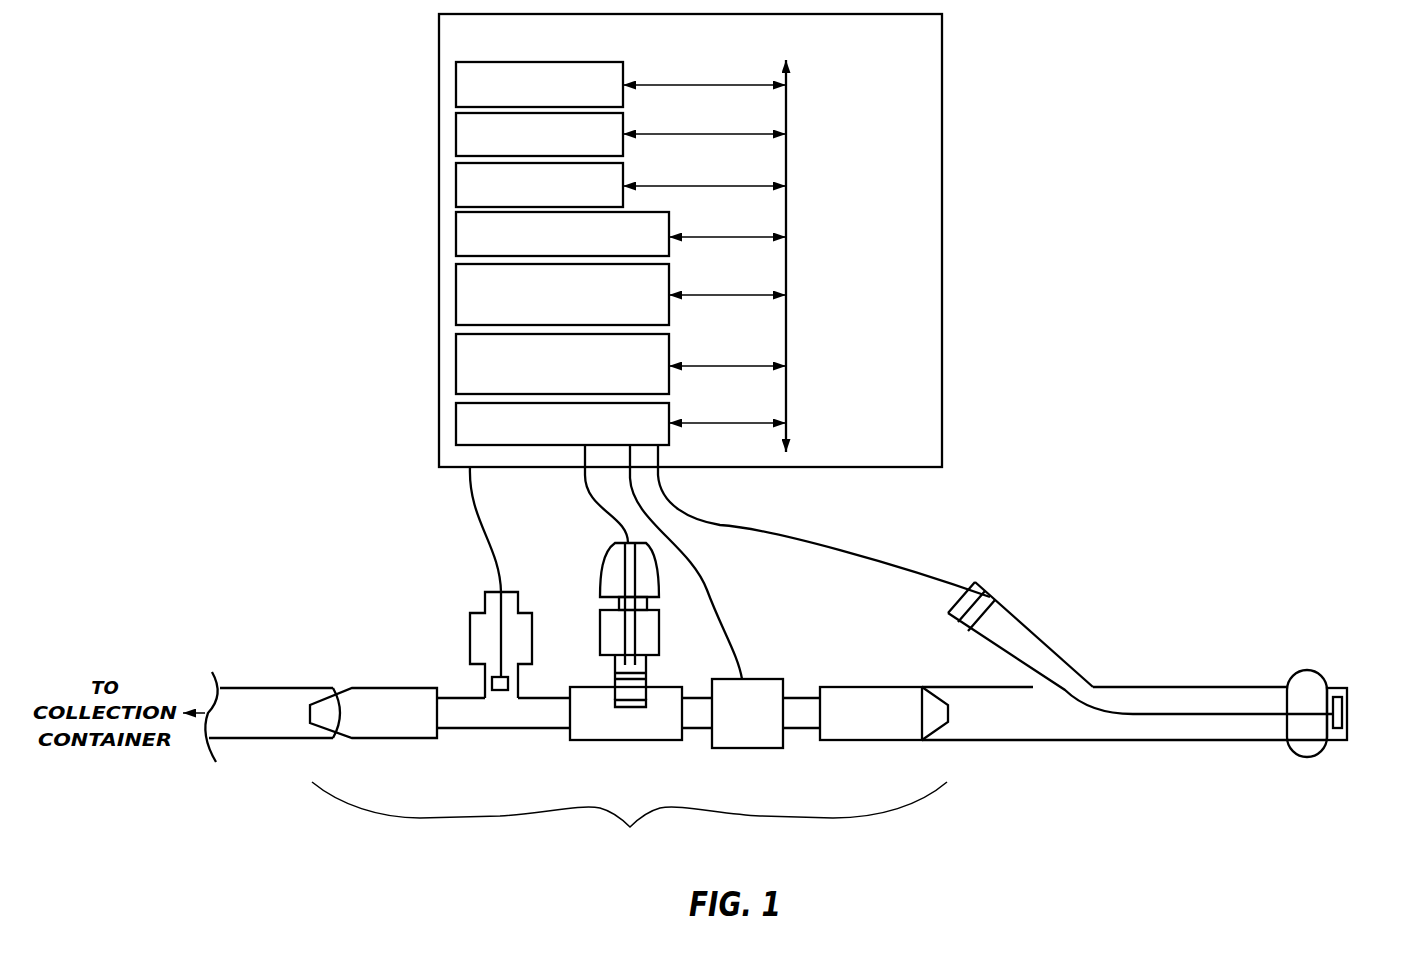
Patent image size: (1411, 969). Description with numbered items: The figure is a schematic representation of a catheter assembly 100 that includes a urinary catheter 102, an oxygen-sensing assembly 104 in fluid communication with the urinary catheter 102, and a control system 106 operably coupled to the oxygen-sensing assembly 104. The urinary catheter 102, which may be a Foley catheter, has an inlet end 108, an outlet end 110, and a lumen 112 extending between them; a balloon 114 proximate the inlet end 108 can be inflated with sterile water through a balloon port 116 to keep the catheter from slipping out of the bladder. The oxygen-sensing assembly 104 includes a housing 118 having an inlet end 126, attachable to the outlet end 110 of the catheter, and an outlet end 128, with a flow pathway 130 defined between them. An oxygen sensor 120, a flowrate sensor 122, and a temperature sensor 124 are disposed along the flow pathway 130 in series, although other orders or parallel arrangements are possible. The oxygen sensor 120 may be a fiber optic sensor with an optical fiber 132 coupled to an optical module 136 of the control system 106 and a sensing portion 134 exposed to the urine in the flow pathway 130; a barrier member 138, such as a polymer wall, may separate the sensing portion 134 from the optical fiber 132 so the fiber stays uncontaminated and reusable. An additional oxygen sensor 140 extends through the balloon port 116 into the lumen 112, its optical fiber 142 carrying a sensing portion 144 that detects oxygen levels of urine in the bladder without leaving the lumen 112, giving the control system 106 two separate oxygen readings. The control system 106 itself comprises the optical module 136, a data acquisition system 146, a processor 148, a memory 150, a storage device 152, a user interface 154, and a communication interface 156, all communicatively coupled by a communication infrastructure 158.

The catheter assembly 100 is at (1155, 298).
The urinary catheter 102 is at (1100, 740).
The oxygen-sensing assembly 104 is at (629, 816).
The control system 106 is at (942, 107).
The inlet end 108 is at (1347, 688).
The outlet end 110 is at (920, 687).
The lumen 112 is at (1123, 702).
The balloon 114 is at (1307, 670).
The balloon port 116 is at (993, 590).
The housing 118 is at (575, 687).
The oxygen sensor 120 is at (668, 636).
The flowrate sensor 122 is at (772, 679).
The temperature sensor 124 is at (488, 683).
The inlet end 126 is at (950, 714).
The outlet end 128 is at (310, 714).
The flow pathway 130 is at (663, 716).
The optical fiber 132 is at (630, 578).
The sensing portion 134 is at (628, 707).
The optical module 136 is at (456, 424).
The barrier member 138 is at (615, 675).
The additional oxygen sensor 140 is at (1175, 711).
The optical fiber 142 is at (1246, 716).
The sensing portion 144 is at (1338, 710).
The data acquisition system 146 is at (456, 366).
The processor 148 is at (456, 87).
The memory 150 is at (456, 134).
The storage device 152 is at (456, 186).
The user interface 154 is at (456, 237).
The communication interface 156 is at (456, 296).
The communication infrastructure 158 is at (786, 218).